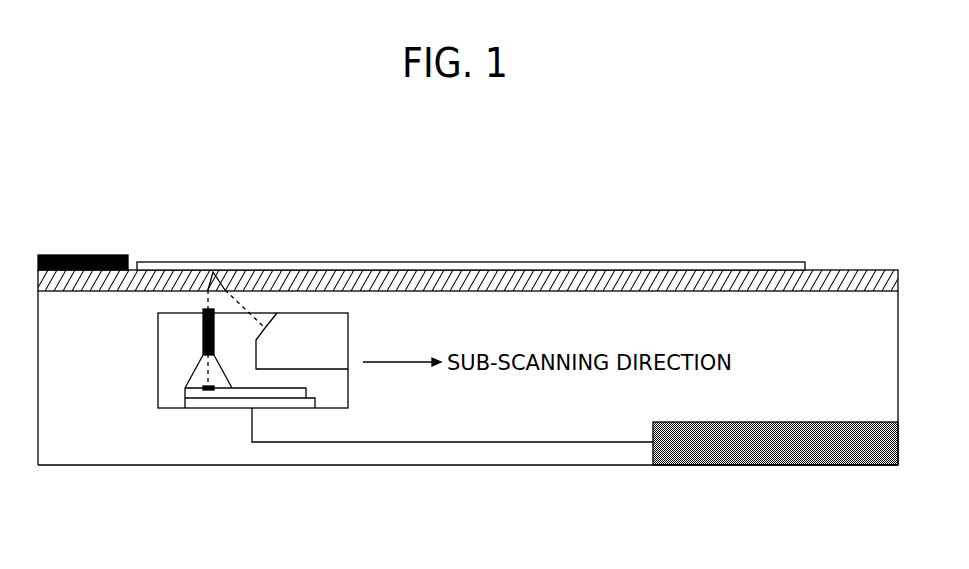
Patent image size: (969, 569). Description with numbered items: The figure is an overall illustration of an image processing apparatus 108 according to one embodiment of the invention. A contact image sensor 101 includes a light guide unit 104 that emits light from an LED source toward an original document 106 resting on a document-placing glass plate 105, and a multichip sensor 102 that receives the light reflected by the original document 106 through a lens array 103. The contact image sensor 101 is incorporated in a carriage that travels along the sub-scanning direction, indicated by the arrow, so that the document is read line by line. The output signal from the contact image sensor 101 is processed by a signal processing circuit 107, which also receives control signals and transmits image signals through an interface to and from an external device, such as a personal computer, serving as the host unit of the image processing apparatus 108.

The contact image sensor 101 is at (158, 362).
The multichip sensor 102 is at (200, 398).
The lens array 103 is at (200, 339).
The light guide unit 104 is at (348, 337).
The document-placing glass plate 105 is at (848, 270).
The original document 106 is at (447, 261).
The signal processing circuit 107 is at (793, 465).
The image processing apparatus 108 is at (348, 261).